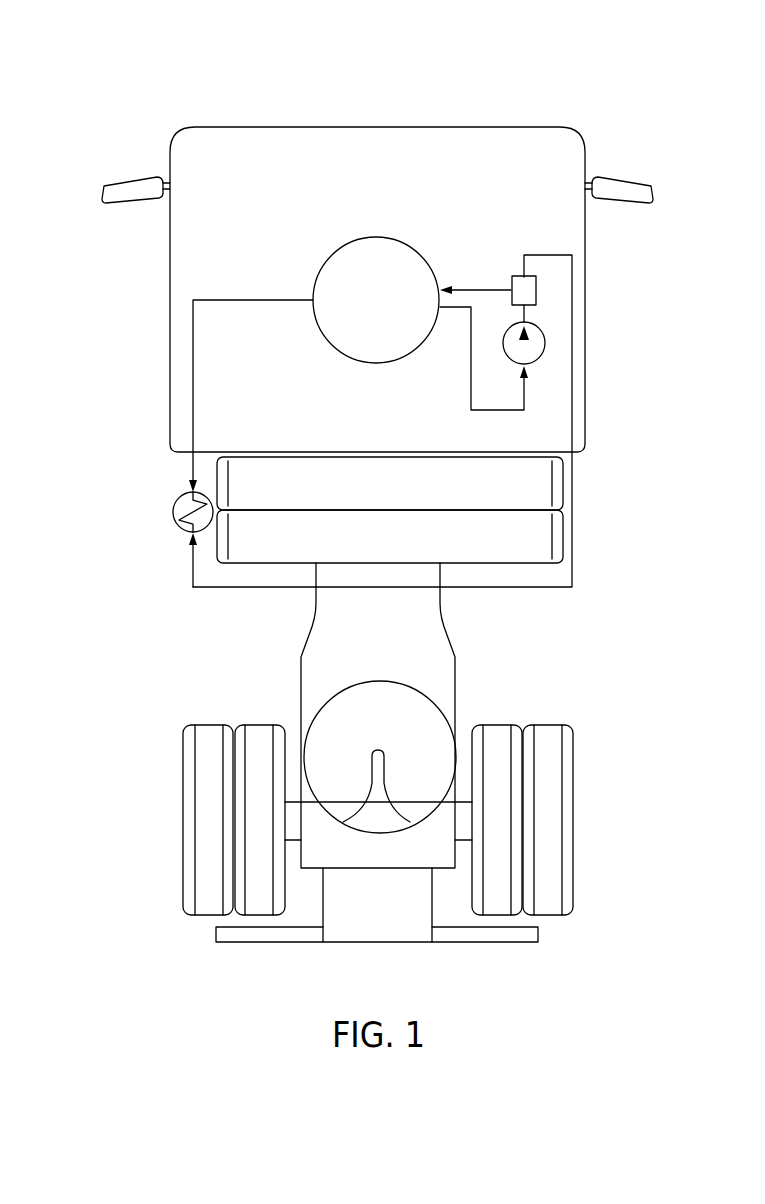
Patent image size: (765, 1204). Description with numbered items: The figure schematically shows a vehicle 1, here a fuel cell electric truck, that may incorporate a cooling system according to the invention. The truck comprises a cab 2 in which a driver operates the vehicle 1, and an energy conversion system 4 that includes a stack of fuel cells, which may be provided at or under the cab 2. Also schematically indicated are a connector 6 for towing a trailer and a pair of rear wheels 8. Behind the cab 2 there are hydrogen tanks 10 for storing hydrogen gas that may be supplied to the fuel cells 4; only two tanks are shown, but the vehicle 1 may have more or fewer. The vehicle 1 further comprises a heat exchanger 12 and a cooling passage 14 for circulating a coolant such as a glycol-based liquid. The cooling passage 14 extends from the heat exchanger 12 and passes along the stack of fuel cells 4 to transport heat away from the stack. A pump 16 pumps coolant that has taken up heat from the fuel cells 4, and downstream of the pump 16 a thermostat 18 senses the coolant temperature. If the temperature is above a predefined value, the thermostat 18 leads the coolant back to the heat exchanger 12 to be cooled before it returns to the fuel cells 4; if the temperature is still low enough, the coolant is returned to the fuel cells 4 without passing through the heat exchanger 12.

The vehicle 1 is at (137, 85).
The cab 2 is at (331, 127).
The energy conversion system 4 is at (376, 293).
The connector 6 is at (403, 725).
The rear wheels 8 is at (183, 826).
The hydrogen tanks 10 is at (563, 482).
The heat exchanger 12 is at (173, 513).
The cooling passage 14 is at (193, 395).
The pump 16 is at (545, 343).
The thermostat 18 is at (536, 290).